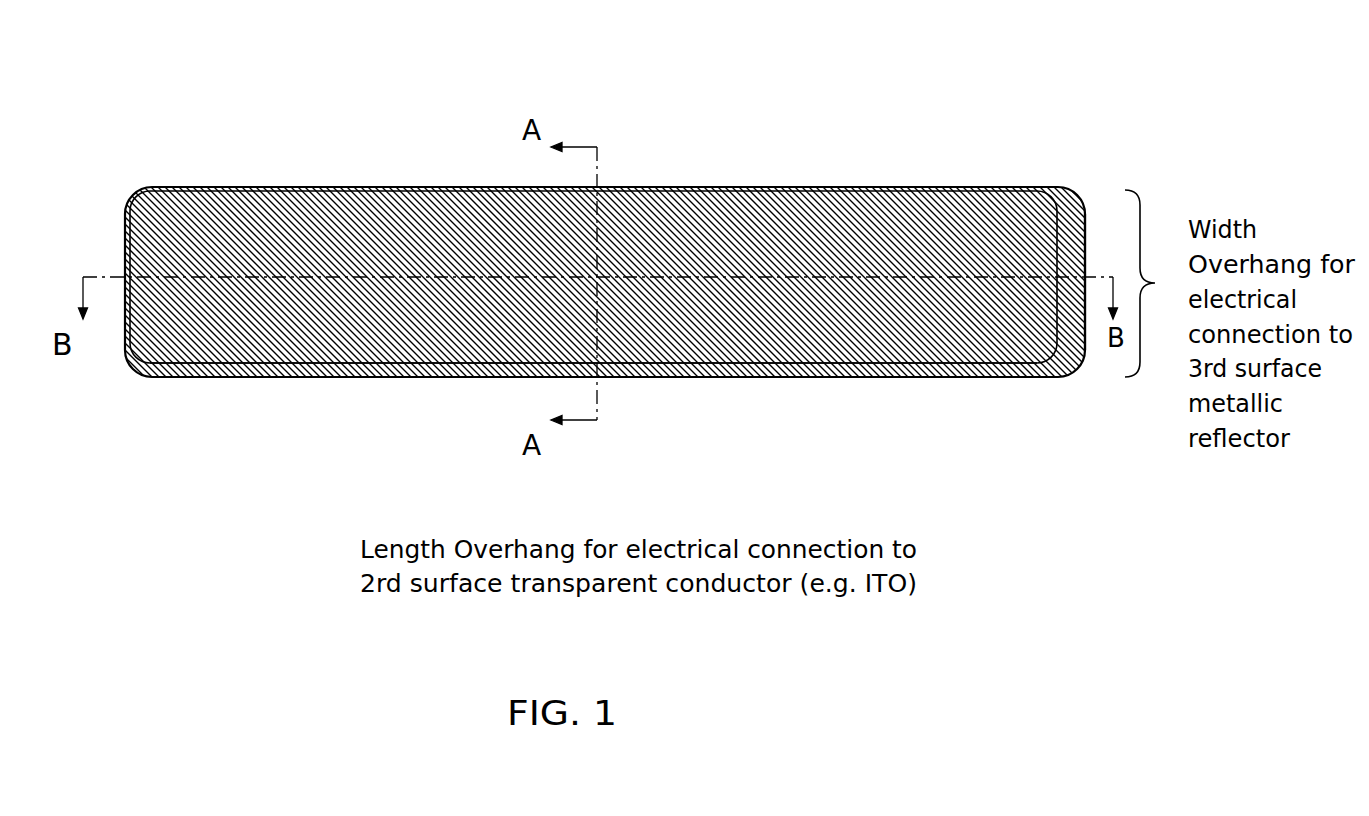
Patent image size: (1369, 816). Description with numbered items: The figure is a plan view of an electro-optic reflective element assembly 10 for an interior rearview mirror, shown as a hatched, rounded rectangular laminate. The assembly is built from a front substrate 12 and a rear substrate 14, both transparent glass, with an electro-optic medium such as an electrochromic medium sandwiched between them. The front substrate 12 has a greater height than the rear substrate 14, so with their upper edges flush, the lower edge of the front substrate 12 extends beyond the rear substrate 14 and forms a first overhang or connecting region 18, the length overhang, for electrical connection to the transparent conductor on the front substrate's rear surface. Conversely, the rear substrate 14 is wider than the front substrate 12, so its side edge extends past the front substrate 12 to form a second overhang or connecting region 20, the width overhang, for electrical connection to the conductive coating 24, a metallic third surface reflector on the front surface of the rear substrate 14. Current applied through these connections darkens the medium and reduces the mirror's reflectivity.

The electro-optic reflective element assembly 10 is at (649, 277).
The front substrate 12 is at (280, 385).
The rear substrate 14 is at (1071, 202).
The first overhang or connecting region 18 is at (432, 380).
The second overhang or connecting region 20 is at (1104, 185).
The conductive coating 24 is at (1065, 345).